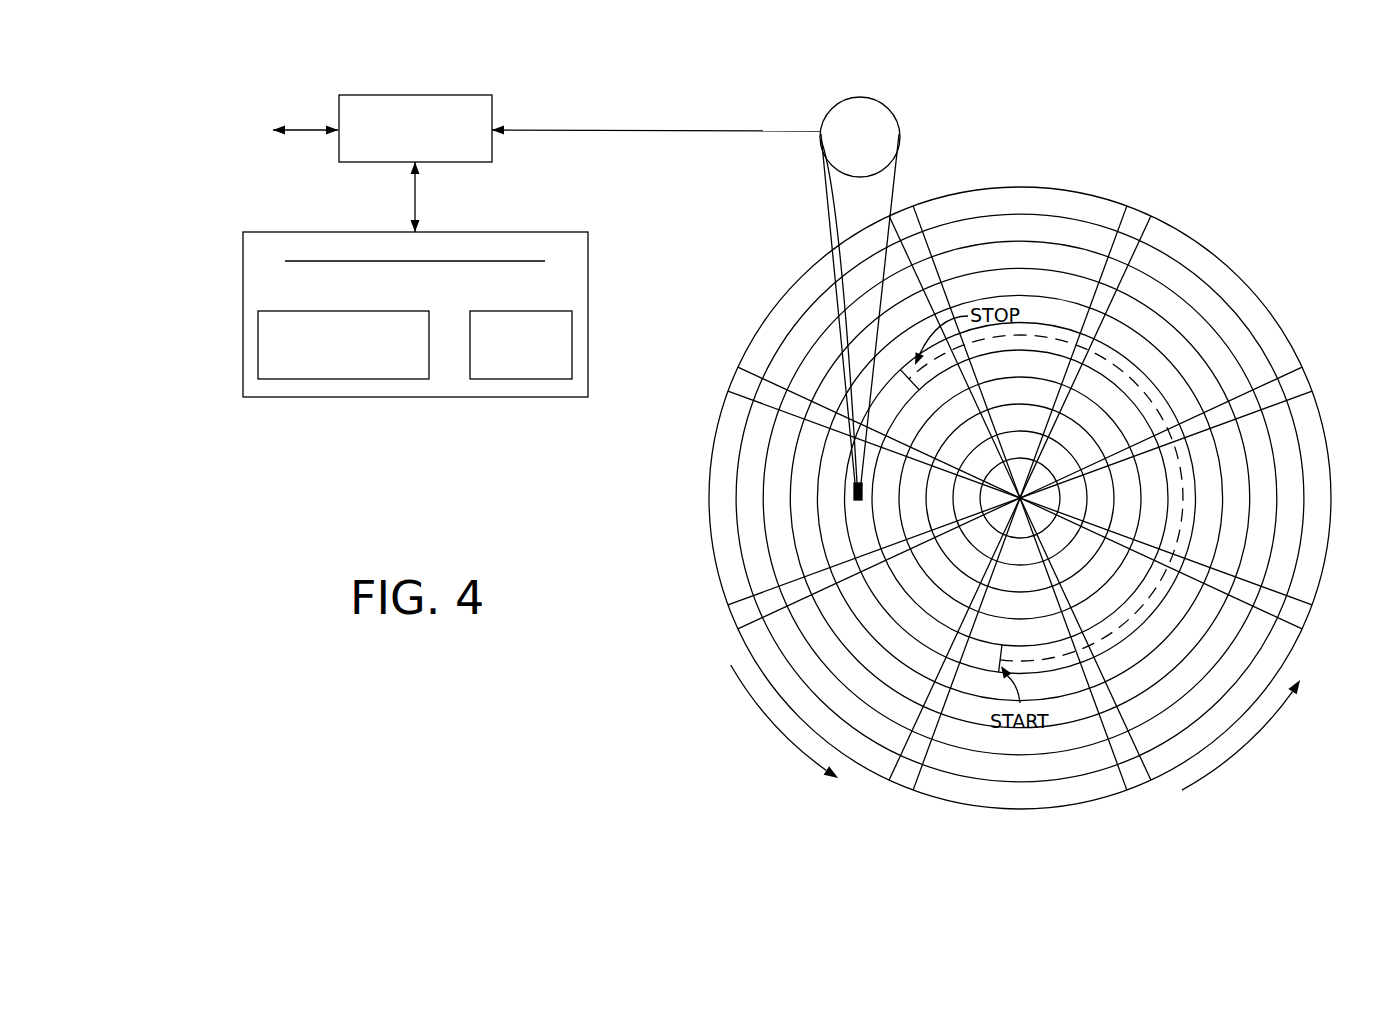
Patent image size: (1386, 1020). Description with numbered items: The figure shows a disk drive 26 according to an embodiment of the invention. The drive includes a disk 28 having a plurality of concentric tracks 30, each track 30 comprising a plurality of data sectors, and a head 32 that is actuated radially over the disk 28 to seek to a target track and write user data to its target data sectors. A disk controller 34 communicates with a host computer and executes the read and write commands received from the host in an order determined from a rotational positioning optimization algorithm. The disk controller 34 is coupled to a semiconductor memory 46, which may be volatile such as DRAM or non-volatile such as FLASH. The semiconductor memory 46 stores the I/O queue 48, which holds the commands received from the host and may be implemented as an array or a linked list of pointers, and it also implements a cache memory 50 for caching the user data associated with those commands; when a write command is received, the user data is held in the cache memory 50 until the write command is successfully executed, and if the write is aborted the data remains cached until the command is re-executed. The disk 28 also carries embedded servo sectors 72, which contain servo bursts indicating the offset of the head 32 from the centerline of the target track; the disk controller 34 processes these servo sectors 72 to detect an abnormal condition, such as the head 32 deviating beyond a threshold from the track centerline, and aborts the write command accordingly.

The disk drive 26 is at (170, 163).
The disk 28 is at (1020, 464).
The track 30 is at (1072, 233).
The head 32 is at (848, 515).
The disk controller 34 is at (493, 102).
The semiconductor memory 46 is at (589, 308).
The I/O queue 48 is at (343, 310).
The cache memory 50 is at (521, 310).
The embedded servo sectors 72 is at (910, 210).